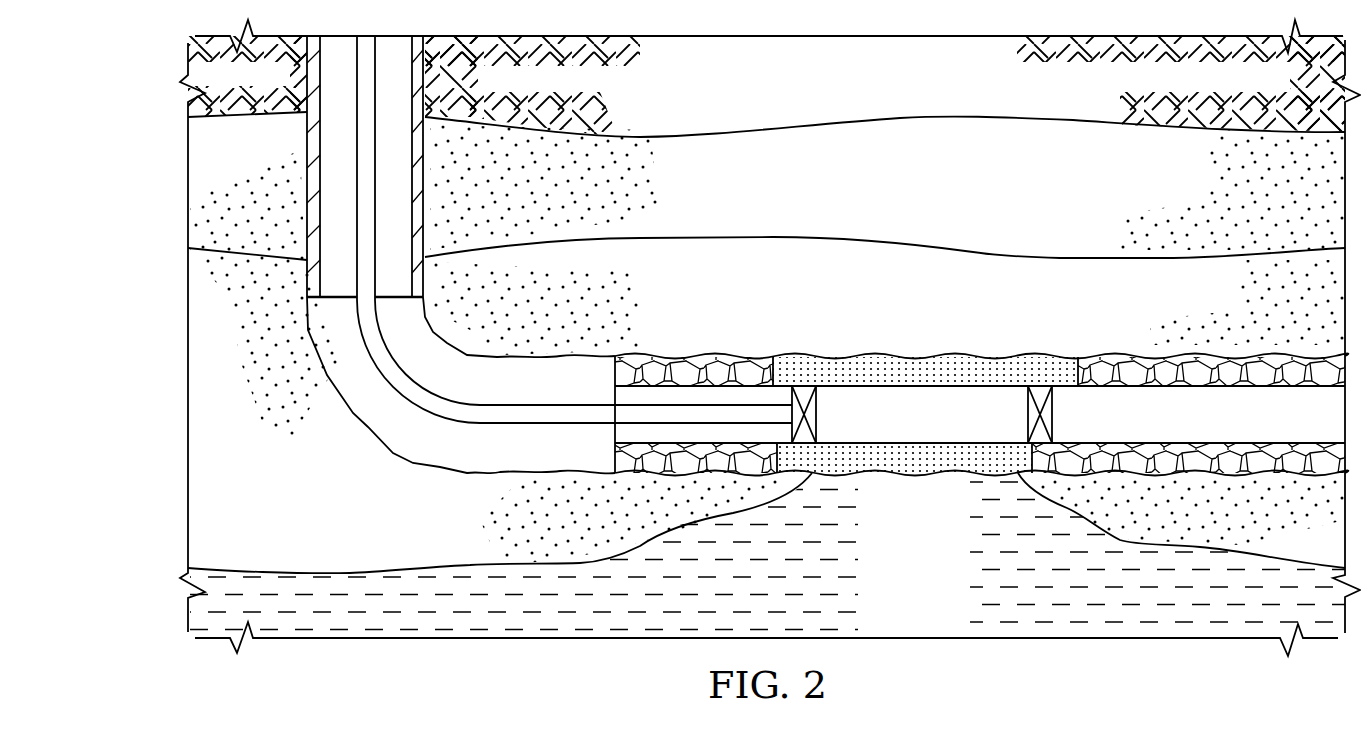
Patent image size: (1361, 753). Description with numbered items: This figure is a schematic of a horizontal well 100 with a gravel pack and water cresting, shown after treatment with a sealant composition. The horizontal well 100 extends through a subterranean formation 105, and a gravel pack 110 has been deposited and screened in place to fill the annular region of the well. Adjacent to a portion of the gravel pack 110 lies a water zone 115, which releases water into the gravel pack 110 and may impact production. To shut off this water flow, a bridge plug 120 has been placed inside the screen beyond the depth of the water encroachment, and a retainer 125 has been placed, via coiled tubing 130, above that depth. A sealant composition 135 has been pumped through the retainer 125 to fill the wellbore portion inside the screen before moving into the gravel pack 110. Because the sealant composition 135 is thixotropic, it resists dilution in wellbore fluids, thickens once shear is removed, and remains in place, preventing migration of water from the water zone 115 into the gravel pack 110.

The horizontal well 100 is at (560, 355).
The subterranean formation 105 is at (822, 313).
The gravel pack 110 is at (1137, 365).
The water zone 115 is at (920, 598).
The bridge plug 120 is at (1030, 412).
The retainer 125 is at (808, 413).
The coiled tubing 130 is at (428, 403).
The sealant composition 135 is at (917, 468).